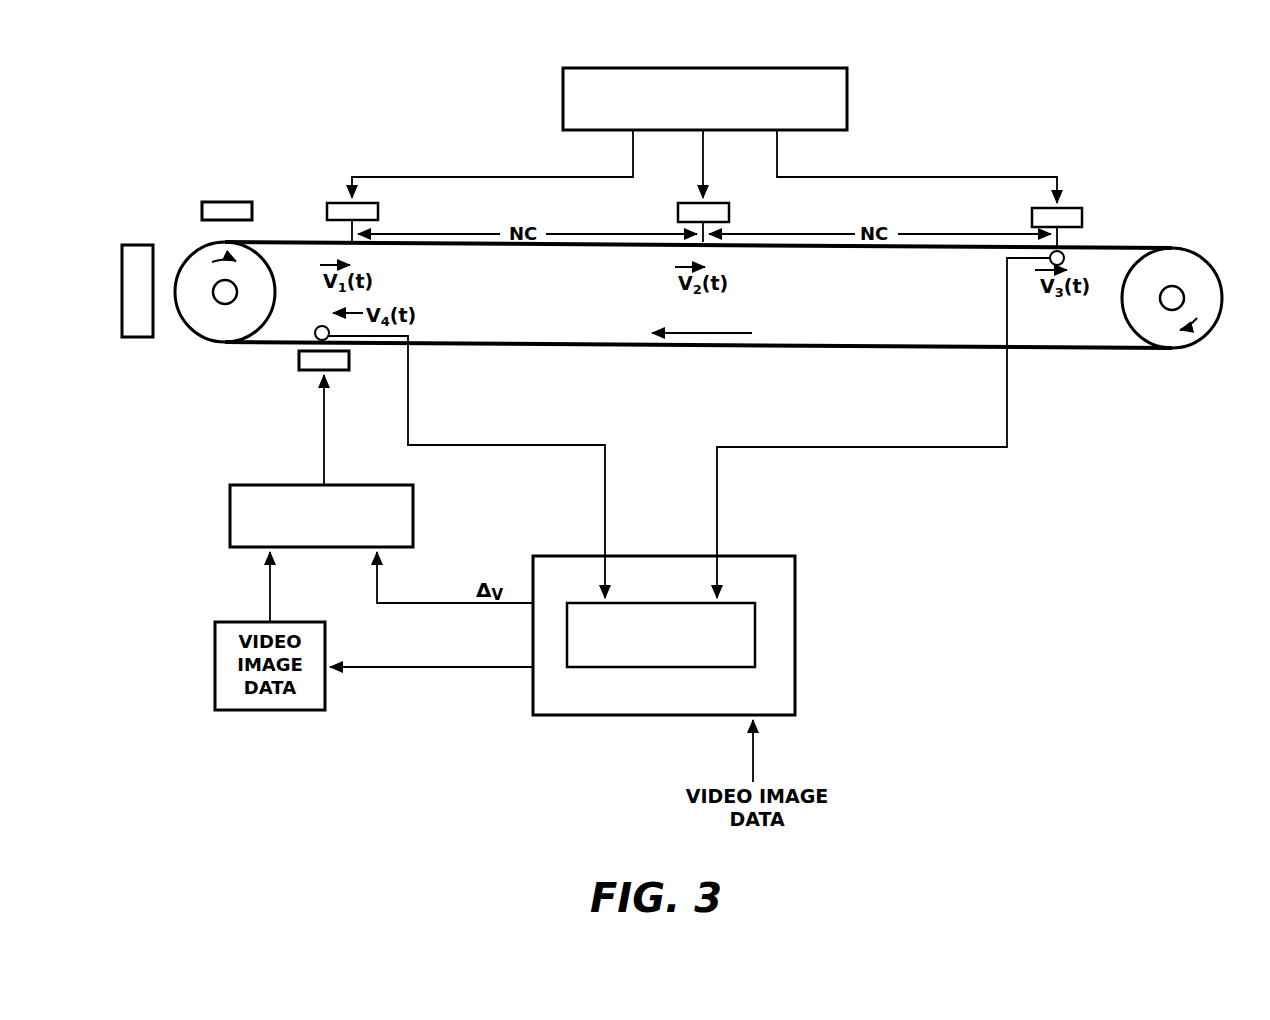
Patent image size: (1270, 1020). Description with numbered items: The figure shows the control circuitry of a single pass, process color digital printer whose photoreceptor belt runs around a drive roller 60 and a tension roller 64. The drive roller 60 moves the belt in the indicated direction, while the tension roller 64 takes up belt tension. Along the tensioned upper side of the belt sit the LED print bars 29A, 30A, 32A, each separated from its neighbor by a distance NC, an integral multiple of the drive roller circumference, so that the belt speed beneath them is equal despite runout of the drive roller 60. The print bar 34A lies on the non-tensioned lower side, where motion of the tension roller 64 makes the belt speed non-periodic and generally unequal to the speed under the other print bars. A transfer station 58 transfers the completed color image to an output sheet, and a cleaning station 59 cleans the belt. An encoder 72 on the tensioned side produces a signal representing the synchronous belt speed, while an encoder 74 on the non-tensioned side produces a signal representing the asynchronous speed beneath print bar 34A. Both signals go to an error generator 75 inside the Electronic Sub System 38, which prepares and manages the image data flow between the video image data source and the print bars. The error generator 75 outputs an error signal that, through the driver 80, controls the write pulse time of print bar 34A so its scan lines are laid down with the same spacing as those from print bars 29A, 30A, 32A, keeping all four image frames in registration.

The Electronic Sub System (ESS) 38 is at (838, 98).
The transfer station 58 is at (137, 258).
The cleaning station 59 is at (227, 211).
The LED print bar 29A is at (340, 211).
The LED print bar 30A is at (695, 213).
The print bar 32A is at (1075, 213).
The print bar 34A is at (330, 362).
The encoder 72 is at (1068, 258).
The encoder 74 is at (292, 342).
The tension roller 64 is at (208, 330).
The drive roller 60 is at (1195, 330).
The driver 80 is at (406, 508).
The error generator 75 is at (641, 604).